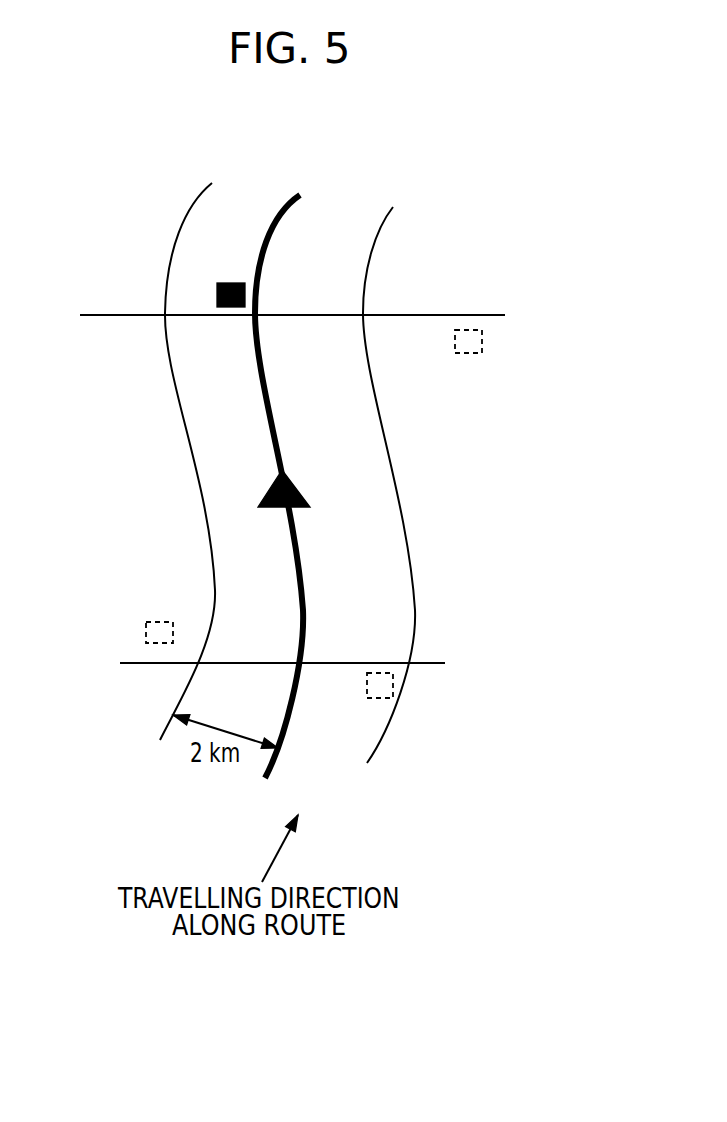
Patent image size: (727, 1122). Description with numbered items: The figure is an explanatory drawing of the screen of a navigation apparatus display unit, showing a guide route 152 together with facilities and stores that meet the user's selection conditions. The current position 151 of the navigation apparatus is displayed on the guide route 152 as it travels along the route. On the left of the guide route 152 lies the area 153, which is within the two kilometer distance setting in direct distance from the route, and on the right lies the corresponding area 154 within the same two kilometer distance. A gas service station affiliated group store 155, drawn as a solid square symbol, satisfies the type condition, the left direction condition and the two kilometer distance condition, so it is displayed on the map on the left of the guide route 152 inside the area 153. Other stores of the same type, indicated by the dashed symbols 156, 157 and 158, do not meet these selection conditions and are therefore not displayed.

The current position 151 is at (293, 482).
The guide route 152 is at (262, 252).
The left-side area 153 is at (222, 368).
The right-side area 154 is at (370, 575).
The gas service station store 155 is at (216, 296).
The non-displayed gas service station store 156 is at (145, 630).
The non-displayed gas service station store 157 is at (380, 698).
The non-displayed gas service station store 158 is at (482, 341).